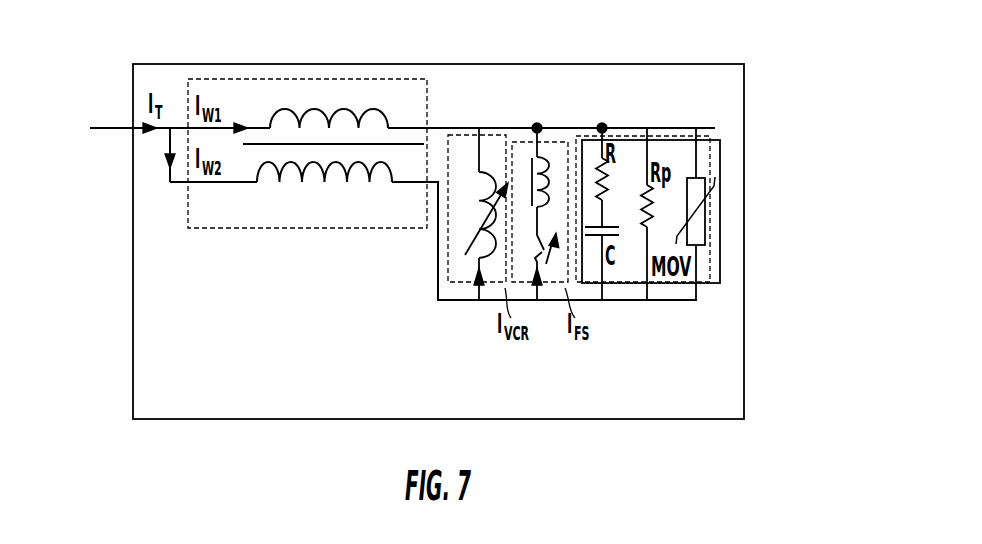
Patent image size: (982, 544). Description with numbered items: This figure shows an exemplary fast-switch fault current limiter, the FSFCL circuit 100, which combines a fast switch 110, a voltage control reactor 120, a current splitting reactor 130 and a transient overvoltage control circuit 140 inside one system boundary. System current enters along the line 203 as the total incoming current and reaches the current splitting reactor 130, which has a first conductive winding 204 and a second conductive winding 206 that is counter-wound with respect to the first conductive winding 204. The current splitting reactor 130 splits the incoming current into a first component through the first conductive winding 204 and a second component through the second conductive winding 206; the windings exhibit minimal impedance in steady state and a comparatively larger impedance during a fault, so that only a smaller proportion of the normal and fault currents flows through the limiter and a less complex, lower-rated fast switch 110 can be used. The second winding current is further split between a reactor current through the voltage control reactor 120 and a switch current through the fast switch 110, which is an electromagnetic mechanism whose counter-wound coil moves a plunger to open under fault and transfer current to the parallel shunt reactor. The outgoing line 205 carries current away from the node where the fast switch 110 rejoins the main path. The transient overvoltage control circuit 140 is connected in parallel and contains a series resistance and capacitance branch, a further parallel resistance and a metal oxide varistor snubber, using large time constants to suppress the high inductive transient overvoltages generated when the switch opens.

The FSFCL circuit 100 is at (613, 103).
The fast switch 110 is at (537, 112).
The voltage control reactor 120 is at (440, 281).
The current splitting reactor 130 is at (175, 212).
The transient overvoltage control circuit 140 is at (724, 236).
The input line 203 is at (110, 117).
The first conductive winding 204 is at (373, 108).
The output bus line 205 is at (672, 128).
The second conductive winding 206 is at (280, 170).